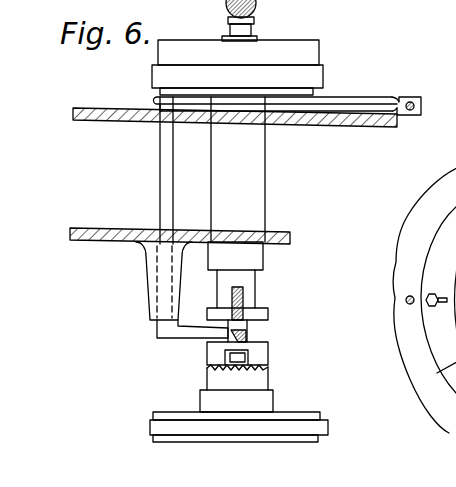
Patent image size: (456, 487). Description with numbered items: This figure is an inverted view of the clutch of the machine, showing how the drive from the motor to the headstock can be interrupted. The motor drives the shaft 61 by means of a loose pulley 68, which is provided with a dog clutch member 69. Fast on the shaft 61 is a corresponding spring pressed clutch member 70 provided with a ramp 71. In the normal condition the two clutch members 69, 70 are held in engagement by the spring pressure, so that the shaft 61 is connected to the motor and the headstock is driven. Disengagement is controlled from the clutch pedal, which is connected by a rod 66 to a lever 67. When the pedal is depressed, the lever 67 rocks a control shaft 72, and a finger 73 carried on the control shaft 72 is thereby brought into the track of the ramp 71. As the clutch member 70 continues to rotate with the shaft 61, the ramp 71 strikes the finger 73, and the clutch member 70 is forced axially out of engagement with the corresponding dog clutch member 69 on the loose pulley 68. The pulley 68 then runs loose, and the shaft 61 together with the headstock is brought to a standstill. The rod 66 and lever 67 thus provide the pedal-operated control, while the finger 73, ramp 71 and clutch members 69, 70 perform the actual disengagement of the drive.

The shaft 61 is at (250, 293).
The rod 66 is at (418, 100).
The lever 67 is at (370, 104).
The loose pulley 68 is at (300, 418).
The dog clutch member 69 is at (262, 378).
The spring pressed clutch member 70 is at (248, 357).
The ramp 71 is at (240, 336).
The control shaft 72 is at (168, 157).
The finger 73 is at (188, 333).